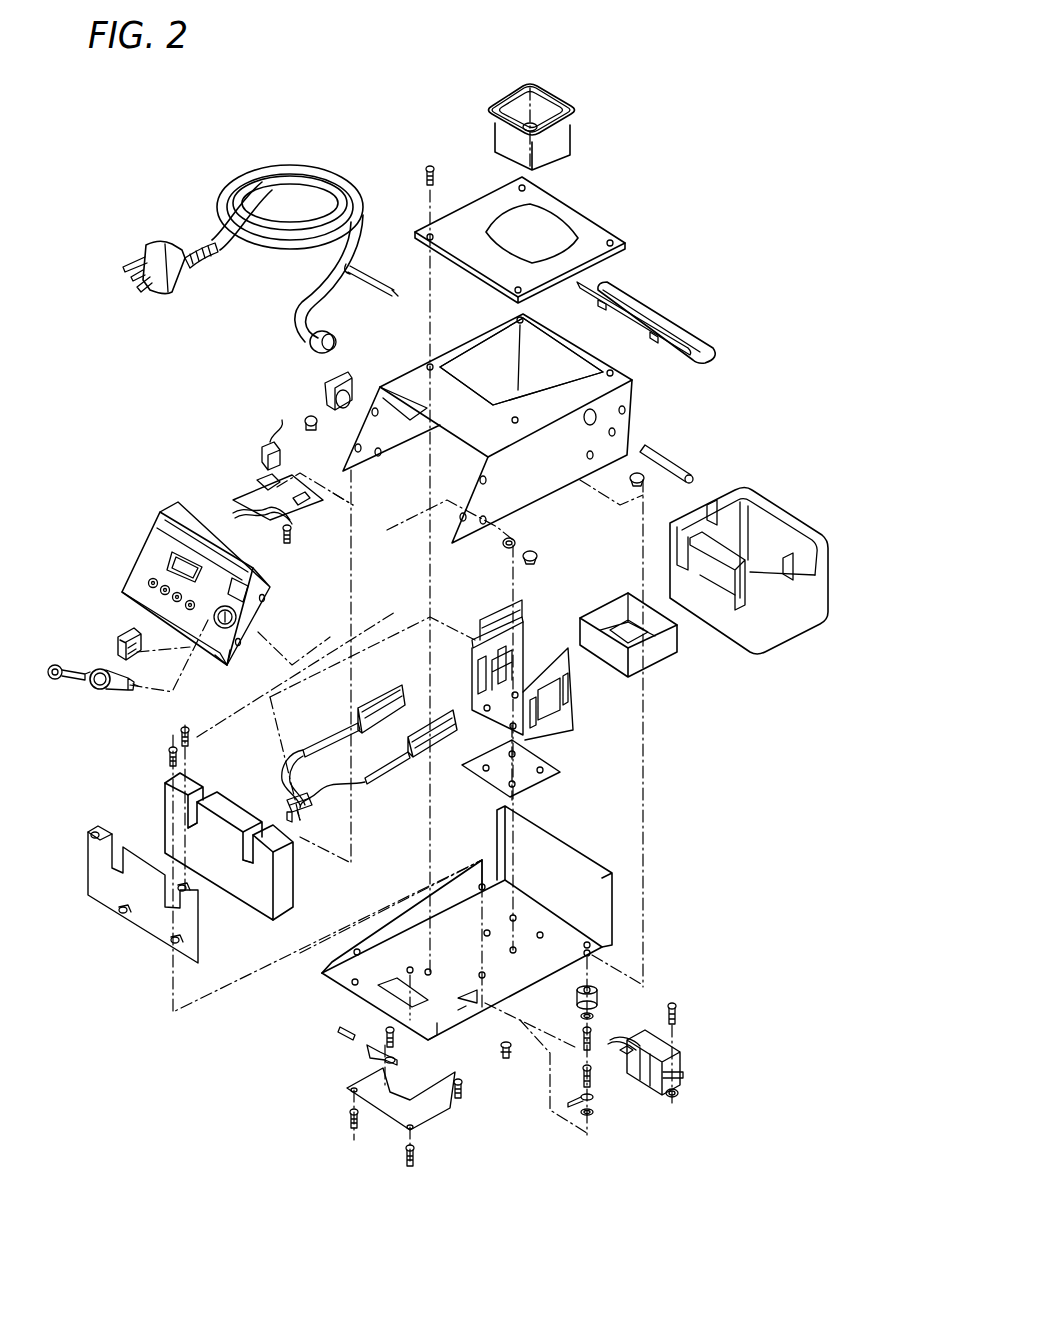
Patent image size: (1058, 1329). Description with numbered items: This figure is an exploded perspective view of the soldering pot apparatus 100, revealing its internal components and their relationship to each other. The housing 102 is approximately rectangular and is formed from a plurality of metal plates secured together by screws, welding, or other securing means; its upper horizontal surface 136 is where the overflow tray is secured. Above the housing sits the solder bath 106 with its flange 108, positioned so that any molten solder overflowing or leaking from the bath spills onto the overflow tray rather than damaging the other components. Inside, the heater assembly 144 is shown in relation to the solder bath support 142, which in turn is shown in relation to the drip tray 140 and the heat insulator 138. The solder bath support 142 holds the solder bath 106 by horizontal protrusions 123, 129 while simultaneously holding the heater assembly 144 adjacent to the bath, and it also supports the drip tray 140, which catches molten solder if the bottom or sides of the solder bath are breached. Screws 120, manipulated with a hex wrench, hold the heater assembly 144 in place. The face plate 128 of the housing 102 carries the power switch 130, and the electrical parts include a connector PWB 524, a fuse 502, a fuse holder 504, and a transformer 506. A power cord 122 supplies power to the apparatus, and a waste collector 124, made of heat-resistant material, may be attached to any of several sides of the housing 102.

The soldering pot apparatus 100 is at (708, 134).
The housing 102 is at (628, 414).
The solder bath 106 is at (578, 114).
The flange 108 is at (606, 224).
The screws 120 is at (665, 452).
The power cord 122 is at (343, 178).
The horizontal protrusion 123 is at (508, 650).
The waste collector 124 is at (658, 312).
The face plate 128 is at (146, 575).
The horizontal protrusion 129 is at (548, 676).
The power switch 130 is at (118, 648).
The upper horizontal surface 136 is at (521, 374).
The heat insulator 138 is at (818, 542).
The drip tray 140 is at (660, 656).
The solder bath support 142 is at (572, 712).
The heater assembly 144 is at (417, 790).
The fuse 502 is at (82, 695).
The fuse holder 504 is at (132, 692).
The transformer 506 is at (672, 1055).
The connector PWB 524 is at (262, 482).